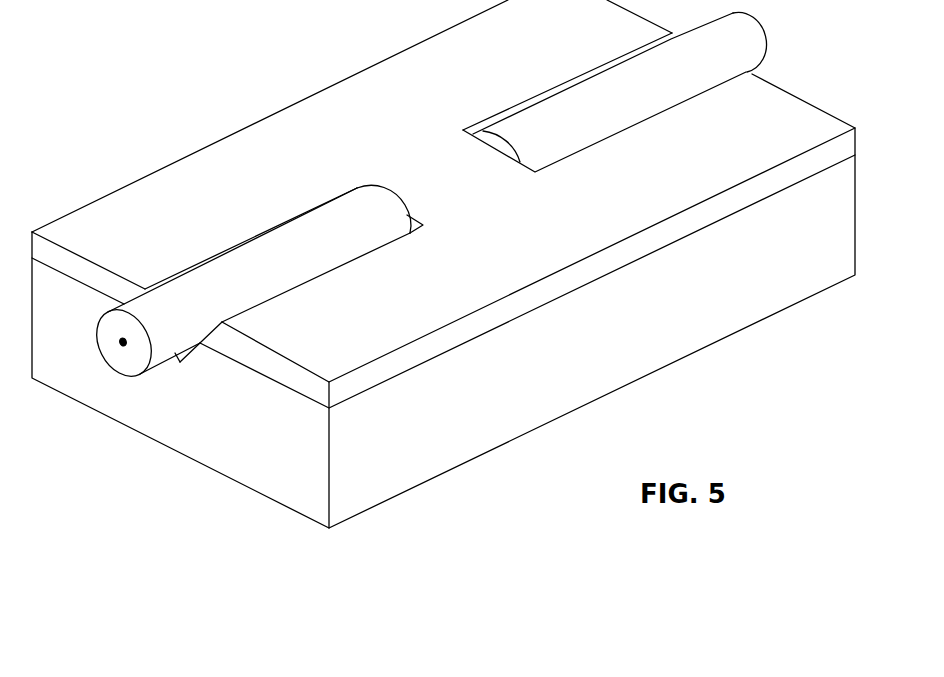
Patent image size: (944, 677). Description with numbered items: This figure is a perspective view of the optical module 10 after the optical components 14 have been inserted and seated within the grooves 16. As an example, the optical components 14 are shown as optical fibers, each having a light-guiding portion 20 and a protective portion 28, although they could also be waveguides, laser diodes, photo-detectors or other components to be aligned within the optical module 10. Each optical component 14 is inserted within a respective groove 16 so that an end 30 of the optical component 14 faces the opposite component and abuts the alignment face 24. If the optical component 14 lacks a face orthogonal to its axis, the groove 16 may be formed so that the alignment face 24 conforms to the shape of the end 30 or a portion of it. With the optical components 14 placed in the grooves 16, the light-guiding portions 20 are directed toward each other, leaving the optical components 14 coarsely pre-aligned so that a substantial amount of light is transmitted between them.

The optical module 10 is at (240, 78).
The optical component 14 is at (318, 232).
The groove 16 is at (212, 254).
The light-guiding portion 20 is at (118, 346).
The alignment face 24 is at (411, 233).
The protective portion 28 is at (103, 334).
The end 30 is at (407, 200).